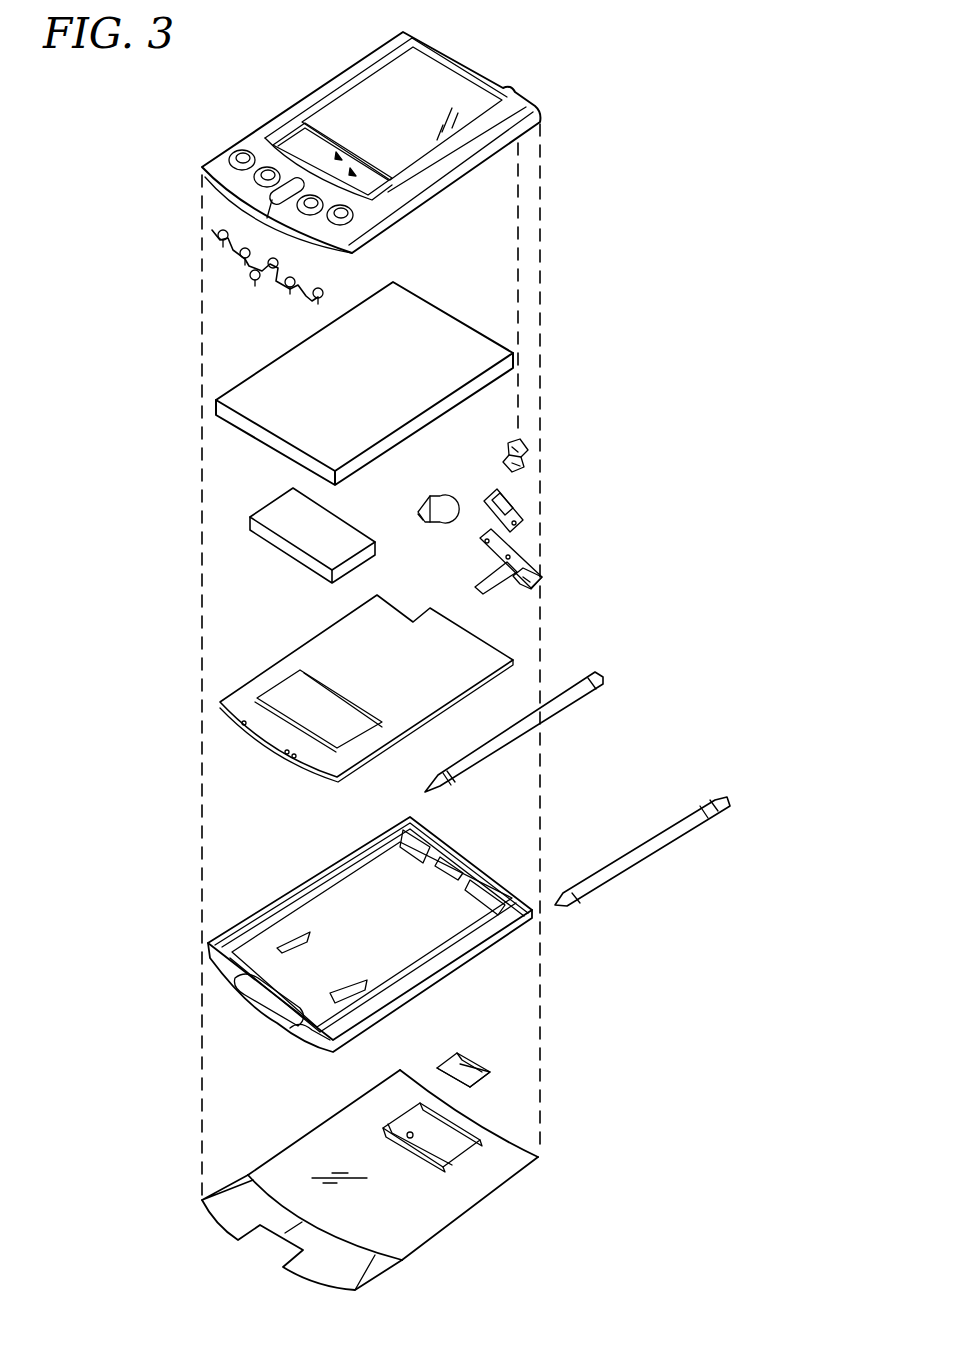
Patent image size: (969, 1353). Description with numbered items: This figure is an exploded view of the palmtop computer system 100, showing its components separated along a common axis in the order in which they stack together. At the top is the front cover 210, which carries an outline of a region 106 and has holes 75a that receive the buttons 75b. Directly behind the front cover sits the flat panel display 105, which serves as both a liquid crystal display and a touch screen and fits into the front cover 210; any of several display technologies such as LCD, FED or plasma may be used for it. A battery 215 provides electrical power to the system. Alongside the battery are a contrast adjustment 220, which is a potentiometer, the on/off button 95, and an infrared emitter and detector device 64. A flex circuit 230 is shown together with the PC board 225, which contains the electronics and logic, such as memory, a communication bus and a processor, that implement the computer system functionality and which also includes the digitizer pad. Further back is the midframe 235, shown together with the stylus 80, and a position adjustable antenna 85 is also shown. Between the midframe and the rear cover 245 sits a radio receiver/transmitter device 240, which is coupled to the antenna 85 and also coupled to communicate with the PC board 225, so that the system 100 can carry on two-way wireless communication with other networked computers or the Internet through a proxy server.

The palmtop computer system 100 is at (98, 93).
The front cover 210 is at (401, 142).
The region 106 is at (302, 140).
The holes 75a is at (240, 156).
The buttons 75b is at (217, 228).
The flat panel display 105 is at (222, 390).
The battery 215 is at (250, 511).
The contrast adjustment 220 is at (438, 494).
The on/off button 95 is at (534, 446).
The infrared emitter and detector device 64 is at (521, 509).
The flex circuit 230 is at (536, 562).
The PC board 225 is at (230, 692).
The position adjustable antenna 85 is at (609, 673).
The stylus 80 is at (722, 793).
The midframe 235 is at (502, 947).
The radio receiver/transmitter device 240 is at (473, 1060).
The rear cover 245 is at (501, 1188).